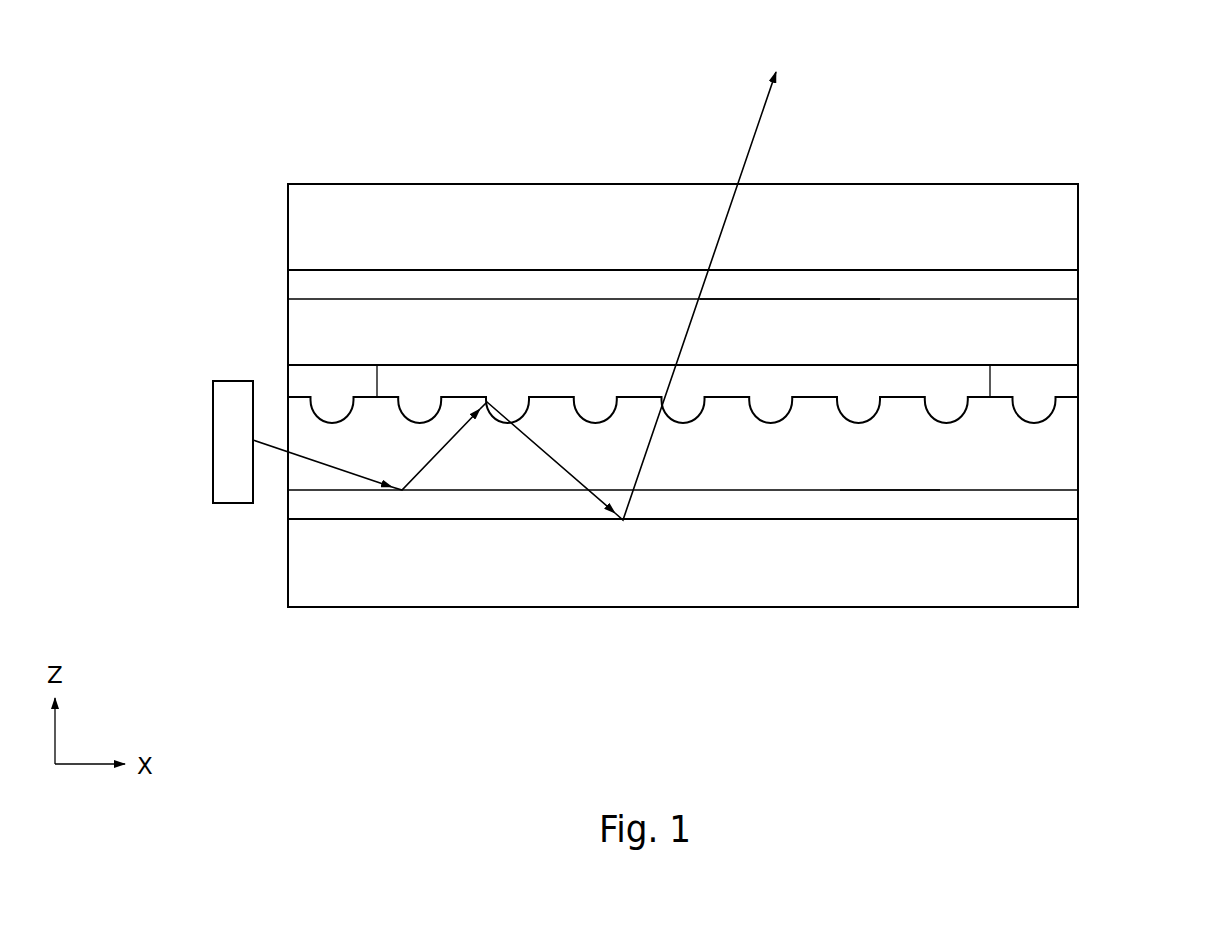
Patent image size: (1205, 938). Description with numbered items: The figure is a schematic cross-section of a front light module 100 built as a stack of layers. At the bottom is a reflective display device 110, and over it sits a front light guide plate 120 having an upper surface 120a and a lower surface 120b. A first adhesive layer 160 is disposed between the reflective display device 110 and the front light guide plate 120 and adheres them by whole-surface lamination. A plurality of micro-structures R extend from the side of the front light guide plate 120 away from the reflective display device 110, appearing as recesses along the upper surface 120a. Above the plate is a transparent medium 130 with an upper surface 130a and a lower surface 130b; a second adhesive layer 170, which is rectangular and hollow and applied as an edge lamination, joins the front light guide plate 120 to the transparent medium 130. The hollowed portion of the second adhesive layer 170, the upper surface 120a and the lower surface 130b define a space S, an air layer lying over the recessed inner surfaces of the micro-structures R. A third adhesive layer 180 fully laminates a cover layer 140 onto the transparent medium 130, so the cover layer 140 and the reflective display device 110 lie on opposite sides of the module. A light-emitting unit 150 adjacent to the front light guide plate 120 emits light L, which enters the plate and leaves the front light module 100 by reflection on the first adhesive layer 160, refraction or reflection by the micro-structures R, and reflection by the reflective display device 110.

The front light module 100 is at (145, 59).
The reflective display device 110 is at (1063, 565).
The front light guide plate 120 is at (1063, 440).
The upper surface 120a is at (815, 398).
The lower surface 120b is at (887, 492).
The transparent medium 130 is at (1063, 335).
The upper surface 130a is at (790, 299).
The lower surface 130b is at (860, 365).
The cover layer 140 is at (1063, 230).
The light-emitting unit 150 is at (220, 440).
The first adhesive layer 160 is at (1063, 505).
The second adhesive layer 170 is at (302, 381).
The third adhesive layer 180 is at (1063, 285).
The light L is at (327, 468).
The micro-structures R is at (352, 420).
The space S is at (727, 384).